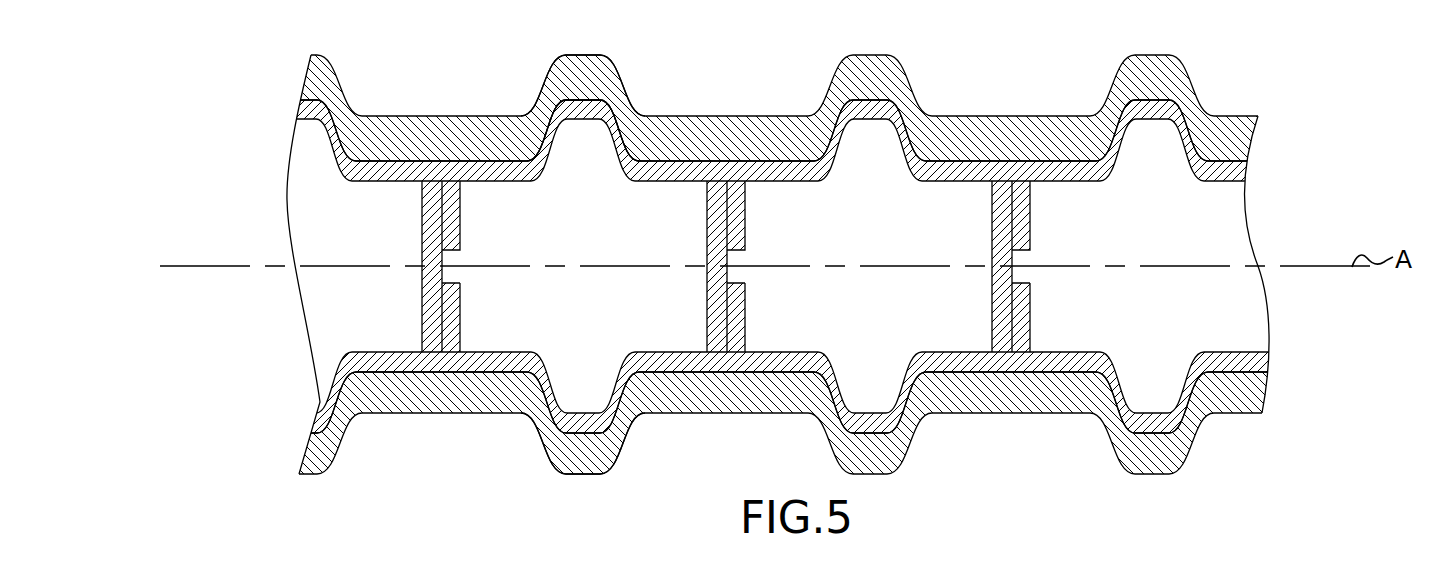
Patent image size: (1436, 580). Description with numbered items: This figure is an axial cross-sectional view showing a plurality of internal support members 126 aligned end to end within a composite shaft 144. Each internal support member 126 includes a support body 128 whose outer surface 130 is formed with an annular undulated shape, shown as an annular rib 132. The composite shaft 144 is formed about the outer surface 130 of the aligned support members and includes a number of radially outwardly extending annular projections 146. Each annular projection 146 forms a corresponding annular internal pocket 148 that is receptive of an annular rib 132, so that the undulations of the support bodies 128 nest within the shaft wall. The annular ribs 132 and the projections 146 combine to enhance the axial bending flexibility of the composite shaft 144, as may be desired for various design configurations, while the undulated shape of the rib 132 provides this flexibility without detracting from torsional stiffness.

The internal support member 126 is at (483, 197).
The support body 128 is at (477, 366).
The outer surface 130 is at (671, 374).
The rib 132 is at (606, 452).
The composite shaft 144 is at (509, 116).
The annular projection 146 is at (602, 78).
The annular internal pocket 148 is at (567, 103).